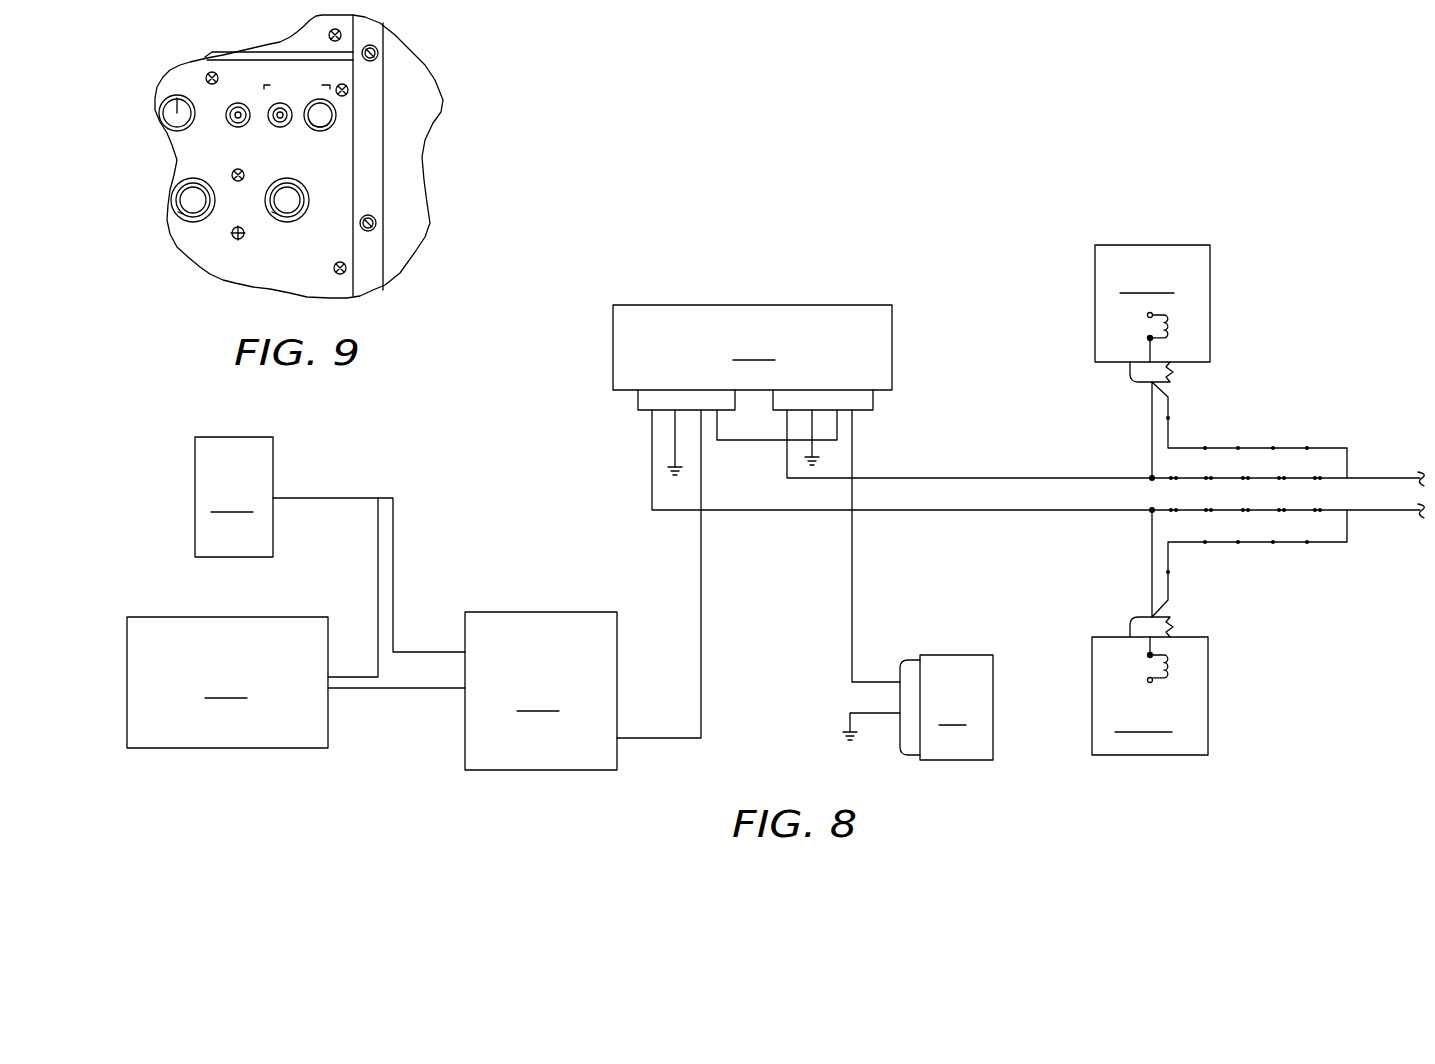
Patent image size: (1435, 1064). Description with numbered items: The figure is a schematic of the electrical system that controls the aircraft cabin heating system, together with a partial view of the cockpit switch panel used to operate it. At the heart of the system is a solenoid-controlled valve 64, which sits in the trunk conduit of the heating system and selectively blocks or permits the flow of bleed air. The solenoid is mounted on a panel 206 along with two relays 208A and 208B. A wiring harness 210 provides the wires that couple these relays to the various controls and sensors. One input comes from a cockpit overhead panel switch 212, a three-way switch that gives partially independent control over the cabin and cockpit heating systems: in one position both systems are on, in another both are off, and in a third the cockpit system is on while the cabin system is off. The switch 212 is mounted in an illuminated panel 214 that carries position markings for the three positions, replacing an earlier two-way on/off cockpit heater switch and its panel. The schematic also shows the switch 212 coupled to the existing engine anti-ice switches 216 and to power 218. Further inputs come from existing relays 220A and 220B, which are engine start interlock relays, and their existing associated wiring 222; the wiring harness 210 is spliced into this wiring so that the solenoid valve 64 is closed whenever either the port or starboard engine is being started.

In FIG. 8, the solenoid-controlled valve 64 is at (918, 707).
In FIG. 8, the panel 206 is at (752, 347).
In FIG. 8, the relay 208A is at (655, 400).
In FIG. 8, the relay 208B is at (860, 404).
In FIG. 8, the wiring harness 210 is at (701, 580).
In FIG. 9, the cockpit overhead panel switch 212 is at (287, 115).
In FIG. 8, the cockpit overhead panel switch 212 is at (541, 691).
In FIG. 9, the illuminated panel 214 is at (340, 203).
In FIG. 8, the engine anti-ice switches 216 is at (296, 682).
In FIG. 8, the power 218 is at (330, 557).
In FIG. 8, the existing relay 220A is at (1152, 313).
In FIG. 8, the existing relay 220B is at (1150, 686).
In FIG. 8, the existing associated wiring 222 is at (1290, 455).